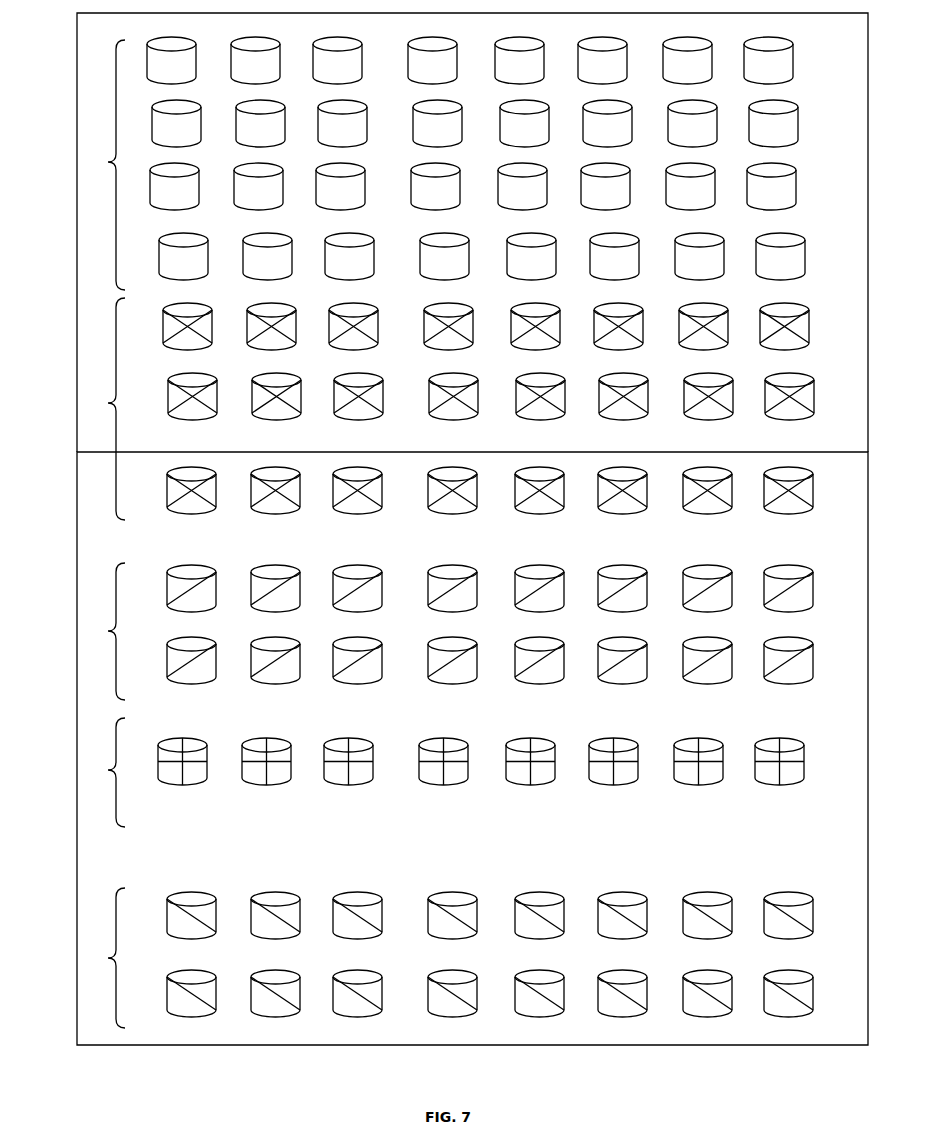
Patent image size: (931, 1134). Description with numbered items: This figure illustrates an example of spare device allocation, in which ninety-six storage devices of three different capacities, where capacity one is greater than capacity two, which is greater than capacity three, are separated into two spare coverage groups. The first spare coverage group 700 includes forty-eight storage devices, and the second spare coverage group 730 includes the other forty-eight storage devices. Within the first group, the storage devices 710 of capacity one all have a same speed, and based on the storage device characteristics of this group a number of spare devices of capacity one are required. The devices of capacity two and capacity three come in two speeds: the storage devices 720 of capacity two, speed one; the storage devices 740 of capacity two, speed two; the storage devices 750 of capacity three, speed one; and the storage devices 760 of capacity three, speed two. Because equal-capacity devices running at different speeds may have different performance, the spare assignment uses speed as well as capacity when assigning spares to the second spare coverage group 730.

The first spare coverage group 700 is at (472, 231).
The second spare coverage group 730 is at (472, 749).
The storage devices of capacity 1 710 is at (116, 185).
The storage devices of capacity 2, speed 1 720 is at (116, 377).
The storage devices of capacity 2, speed 2 740 is at (114, 687).
The storage devices of capacity 3, speed 1 750 is at (113, 828).
The storage devices of capacity 3, speed 2 760 is at (114, 912).